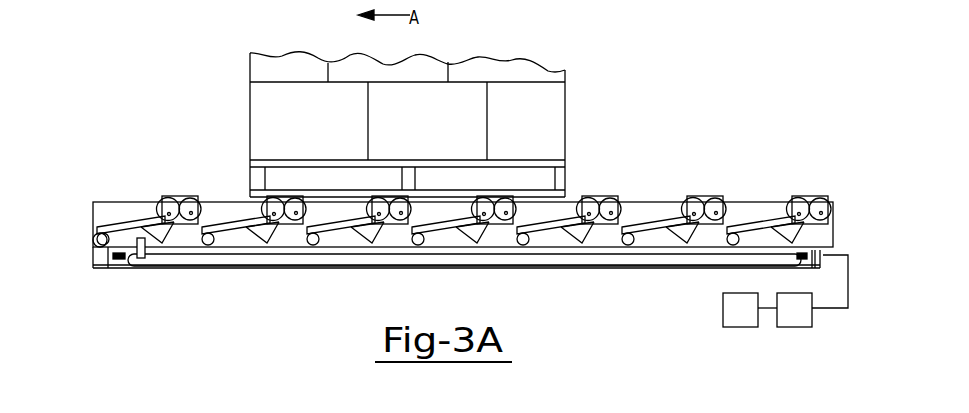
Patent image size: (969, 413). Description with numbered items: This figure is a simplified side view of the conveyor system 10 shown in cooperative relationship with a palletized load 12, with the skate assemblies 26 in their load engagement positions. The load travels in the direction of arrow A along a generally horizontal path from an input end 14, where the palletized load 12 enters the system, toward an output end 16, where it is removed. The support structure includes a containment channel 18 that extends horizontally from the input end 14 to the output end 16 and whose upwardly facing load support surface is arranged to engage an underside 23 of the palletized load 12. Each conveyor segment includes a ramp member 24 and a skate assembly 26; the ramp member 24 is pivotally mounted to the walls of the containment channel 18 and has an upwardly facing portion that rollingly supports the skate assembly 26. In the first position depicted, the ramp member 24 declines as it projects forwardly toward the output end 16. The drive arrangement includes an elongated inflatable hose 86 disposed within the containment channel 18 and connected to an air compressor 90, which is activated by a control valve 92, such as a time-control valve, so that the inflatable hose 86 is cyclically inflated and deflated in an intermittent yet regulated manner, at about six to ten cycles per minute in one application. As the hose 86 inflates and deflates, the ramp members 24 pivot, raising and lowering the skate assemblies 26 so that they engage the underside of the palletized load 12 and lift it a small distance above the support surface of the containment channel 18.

The conveyor system 10 is at (124, 90).
The palletized load 12 is at (565, 118).
The input end 14 is at (835, 230).
The output end 16 is at (93, 238).
The first containment channel 18 is at (648, 192).
The underside 23 is at (254, 199).
The ramp member 24 is at (432, 236).
The skate assembly 26 is at (706, 196).
The inflatable hose 86 is at (178, 262).
The air compressor 90 is at (800, 328).
The control valve 92 is at (740, 328).